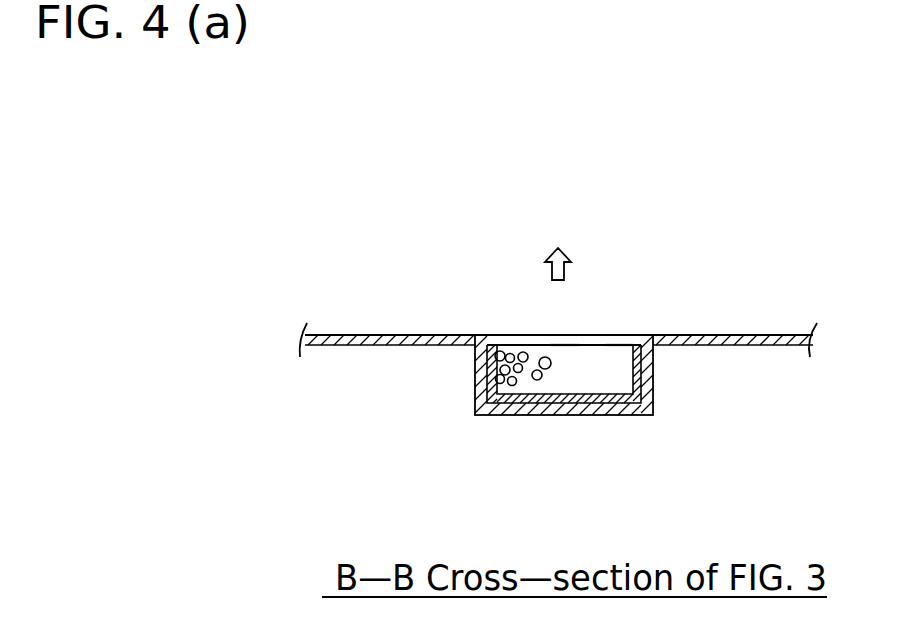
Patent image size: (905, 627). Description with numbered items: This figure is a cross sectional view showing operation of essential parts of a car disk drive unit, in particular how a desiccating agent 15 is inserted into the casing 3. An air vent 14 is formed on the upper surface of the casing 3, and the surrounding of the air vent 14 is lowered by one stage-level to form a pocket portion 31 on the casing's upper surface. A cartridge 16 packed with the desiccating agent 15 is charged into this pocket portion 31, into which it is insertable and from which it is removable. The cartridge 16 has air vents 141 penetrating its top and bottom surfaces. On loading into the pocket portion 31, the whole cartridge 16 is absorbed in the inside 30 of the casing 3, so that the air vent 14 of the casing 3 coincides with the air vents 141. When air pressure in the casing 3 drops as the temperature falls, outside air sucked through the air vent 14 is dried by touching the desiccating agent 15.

The casing 3 is at (377, 273).
The inside 30 is at (400, 400).
The pocket portion 31 is at (657, 407).
The air vent 14 is at (630, 272).
The air vents 141 is at (563, 335).
The desiccating agent 15 is at (504, 350).
The cartridge 16 is at (617, 335).